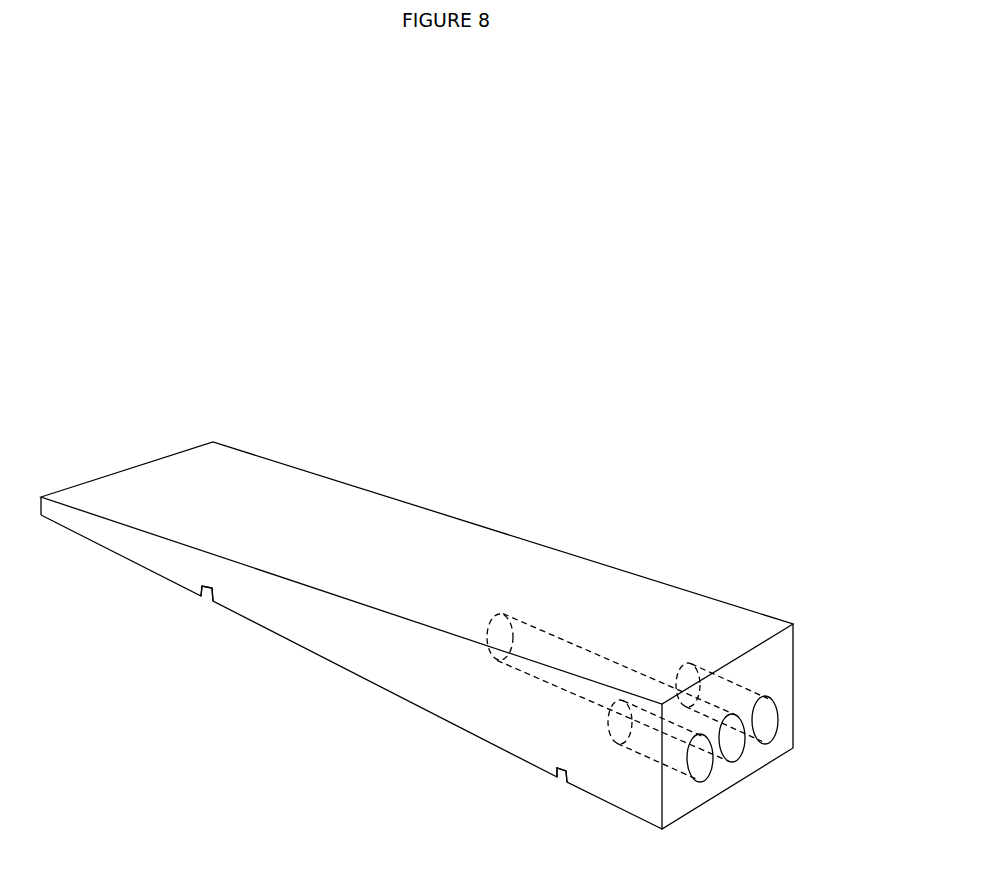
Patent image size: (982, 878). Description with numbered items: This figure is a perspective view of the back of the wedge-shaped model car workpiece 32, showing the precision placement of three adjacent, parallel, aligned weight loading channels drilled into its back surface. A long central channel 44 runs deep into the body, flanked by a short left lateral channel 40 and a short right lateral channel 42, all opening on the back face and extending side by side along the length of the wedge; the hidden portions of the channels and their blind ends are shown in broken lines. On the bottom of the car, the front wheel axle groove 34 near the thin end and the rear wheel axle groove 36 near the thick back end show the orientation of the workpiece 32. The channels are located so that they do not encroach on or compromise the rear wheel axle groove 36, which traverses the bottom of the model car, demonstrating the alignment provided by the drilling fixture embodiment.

The wedge-shaped model car workpiece 32 is at (428, 532).
The front wheel axle groove 34 is at (205, 595).
The rear wheel axle groove 36 is at (558, 773).
The short left lateral channel 40 is at (735, 745).
The short right lateral channel 42 is at (700, 762).
The third bore 44 is at (768, 719).